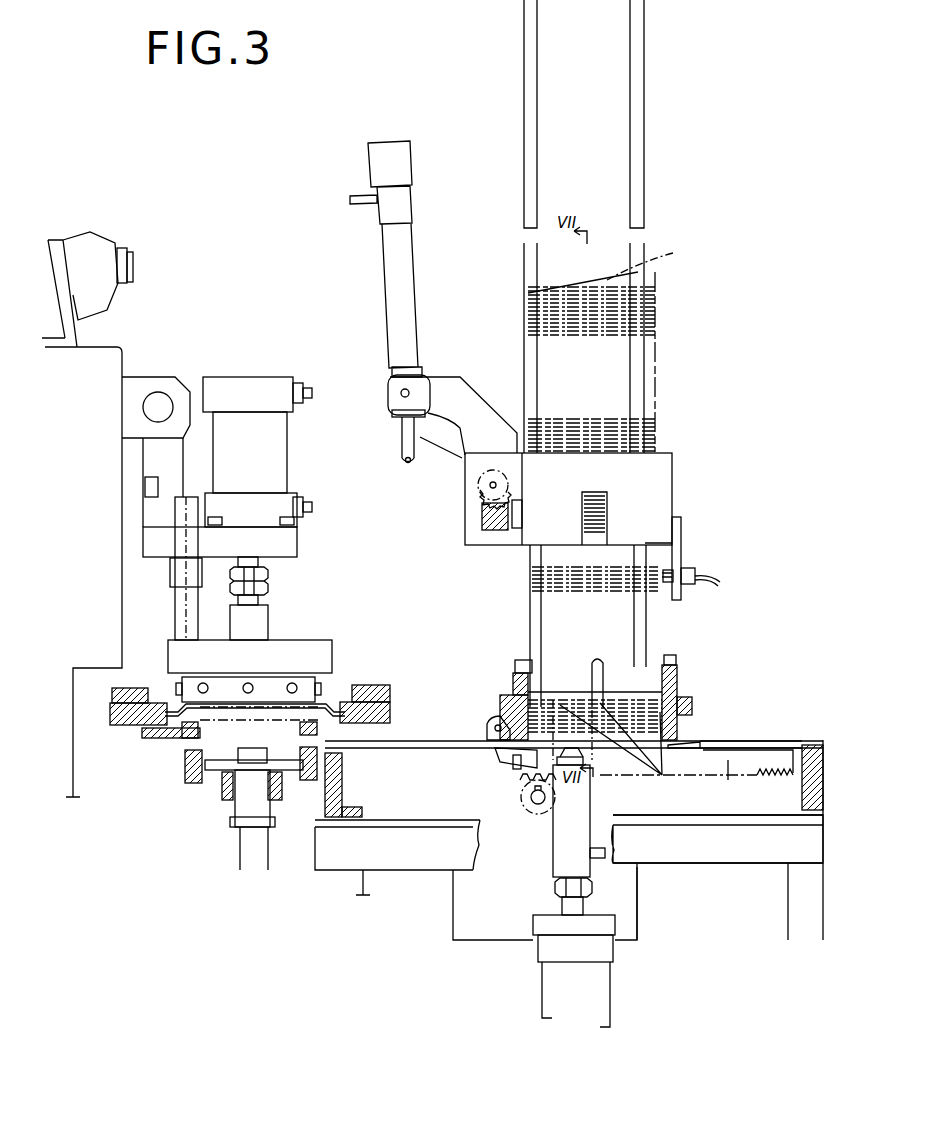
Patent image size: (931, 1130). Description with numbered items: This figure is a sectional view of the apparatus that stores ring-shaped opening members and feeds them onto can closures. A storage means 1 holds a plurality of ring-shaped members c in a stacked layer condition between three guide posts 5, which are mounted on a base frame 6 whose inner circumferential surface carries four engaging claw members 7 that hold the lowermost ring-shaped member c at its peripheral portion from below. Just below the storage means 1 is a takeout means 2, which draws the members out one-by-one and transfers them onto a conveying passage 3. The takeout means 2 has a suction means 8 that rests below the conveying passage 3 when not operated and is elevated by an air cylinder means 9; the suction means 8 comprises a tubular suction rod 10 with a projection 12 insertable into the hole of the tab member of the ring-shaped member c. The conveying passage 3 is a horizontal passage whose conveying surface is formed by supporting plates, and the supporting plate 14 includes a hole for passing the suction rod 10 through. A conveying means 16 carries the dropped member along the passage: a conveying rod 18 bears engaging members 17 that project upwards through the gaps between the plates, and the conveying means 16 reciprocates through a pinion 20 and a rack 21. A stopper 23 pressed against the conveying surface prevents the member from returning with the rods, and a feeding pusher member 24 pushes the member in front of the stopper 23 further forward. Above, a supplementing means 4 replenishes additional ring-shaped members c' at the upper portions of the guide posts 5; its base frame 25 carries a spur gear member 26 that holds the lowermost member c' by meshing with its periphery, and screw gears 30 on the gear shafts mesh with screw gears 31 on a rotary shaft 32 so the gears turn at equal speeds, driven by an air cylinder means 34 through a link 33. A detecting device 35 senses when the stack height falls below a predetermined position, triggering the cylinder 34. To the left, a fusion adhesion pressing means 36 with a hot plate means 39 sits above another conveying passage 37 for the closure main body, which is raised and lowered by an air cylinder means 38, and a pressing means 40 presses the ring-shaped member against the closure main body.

The storage means 1 is at (688, 675).
The takeout means 2 is at (622, 970).
The conveying passage 3 is at (434, 740).
The supplementing means 4 is at (465, 364).
The guide posts 5 is at (532, 620).
The base frame 6 is at (513, 662).
The engaging claw members 7 is at (662, 775).
The suction means 8 is at (553, 812).
The air cylinder means 9 is at (550, 980).
The tubular suction rod 10 is at (577, 850).
The projection 12 is at (568, 700).
The supporting plate 14 is at (740, 742).
The conveying means 16 is at (760, 760).
The engaging members 17 is at (693, 745).
The conveying rod 18 is at (678, 786).
The pinion 20 is at (523, 812).
The rack 21 is at (765, 780).
The stopper 23 is at (490, 718).
The feeding pusher member 24 is at (510, 750).
The base frame 25 is at (670, 452).
The spur gear member 26 is at (608, 510).
The screw gears 30 is at (500, 533).
The screw gears 31 is at (478, 497).
The rotary shaft 32 is at (502, 488).
The link 33 is at (425, 470).
The air cylinder means 34 is at (386, 283).
The detecting device 35 is at (700, 583).
The fusion adhesion pressing means 36 is at (288, 596).
The conveying passage 37 is at (170, 723).
The air cylinder means 38 is at (293, 448).
The hot plate means 39 is at (305, 683).
The pressing means 40 is at (222, 772).
The ring-shaped member C is at (621, 538).
The ring-shaped member C' is at (616, 282).